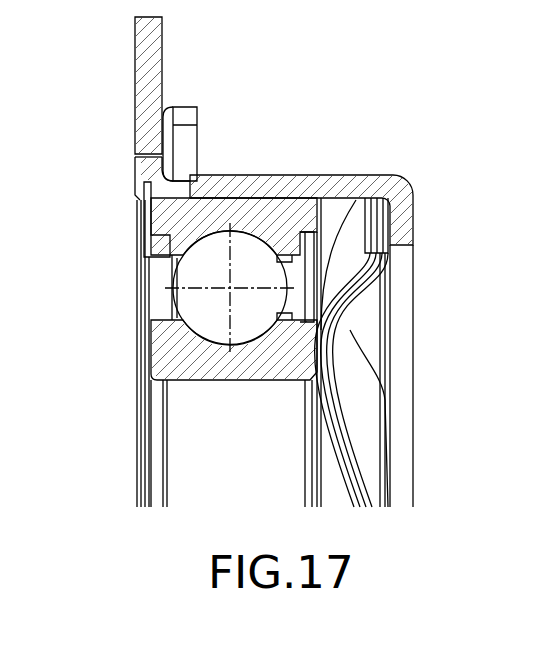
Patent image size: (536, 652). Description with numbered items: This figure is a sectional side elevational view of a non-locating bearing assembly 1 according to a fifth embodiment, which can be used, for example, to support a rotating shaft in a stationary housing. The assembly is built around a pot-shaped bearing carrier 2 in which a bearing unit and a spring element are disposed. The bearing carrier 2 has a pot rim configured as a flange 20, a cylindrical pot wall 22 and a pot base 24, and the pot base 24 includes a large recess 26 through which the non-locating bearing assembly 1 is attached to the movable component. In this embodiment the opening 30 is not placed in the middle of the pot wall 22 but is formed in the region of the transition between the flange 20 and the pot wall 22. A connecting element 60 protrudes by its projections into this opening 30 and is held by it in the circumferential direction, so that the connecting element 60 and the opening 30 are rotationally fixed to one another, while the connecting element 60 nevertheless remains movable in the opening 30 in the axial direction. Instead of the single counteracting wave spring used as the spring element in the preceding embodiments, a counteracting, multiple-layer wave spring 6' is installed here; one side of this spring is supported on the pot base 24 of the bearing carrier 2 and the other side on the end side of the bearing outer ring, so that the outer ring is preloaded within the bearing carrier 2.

The non-locating bearing assembly 1 is at (280, 48).
The bearing carrier 2 is at (112, 66).
The flange 20 is at (155, 60).
The pot wall 22 is at (305, 184).
The pot base 24 is at (402, 212).
The recess 26 is at (418, 386).
The opening 30 is at (138, 170).
The connecting element 60 is at (150, 216).
The multiple-layer wave spring 6' is at (387, 352).